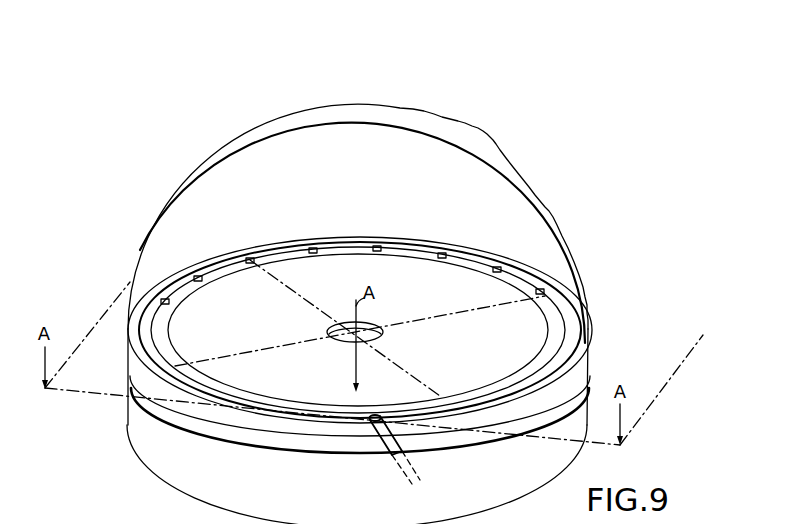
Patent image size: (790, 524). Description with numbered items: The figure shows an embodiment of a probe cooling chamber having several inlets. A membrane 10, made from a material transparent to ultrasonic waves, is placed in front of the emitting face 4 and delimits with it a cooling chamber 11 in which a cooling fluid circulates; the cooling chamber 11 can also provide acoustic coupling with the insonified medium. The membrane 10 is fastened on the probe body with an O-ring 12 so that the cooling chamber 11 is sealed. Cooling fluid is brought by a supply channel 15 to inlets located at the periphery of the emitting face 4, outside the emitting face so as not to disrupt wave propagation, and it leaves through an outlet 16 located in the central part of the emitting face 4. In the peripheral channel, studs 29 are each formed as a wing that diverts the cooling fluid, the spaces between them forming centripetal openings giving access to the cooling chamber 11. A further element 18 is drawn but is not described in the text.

The emitting face 4 is at (228, 290).
The membrane 10 is at (472, 150).
The cooling chamber 11 is at (318, 210).
The O-ring 12 is at (588, 373).
The supply channel 15 is at (420, 482).
The outlet 16 is at (383, 332).
The cable outlet 18 is at (374, 425).
The studs 29 is at (256, 264).